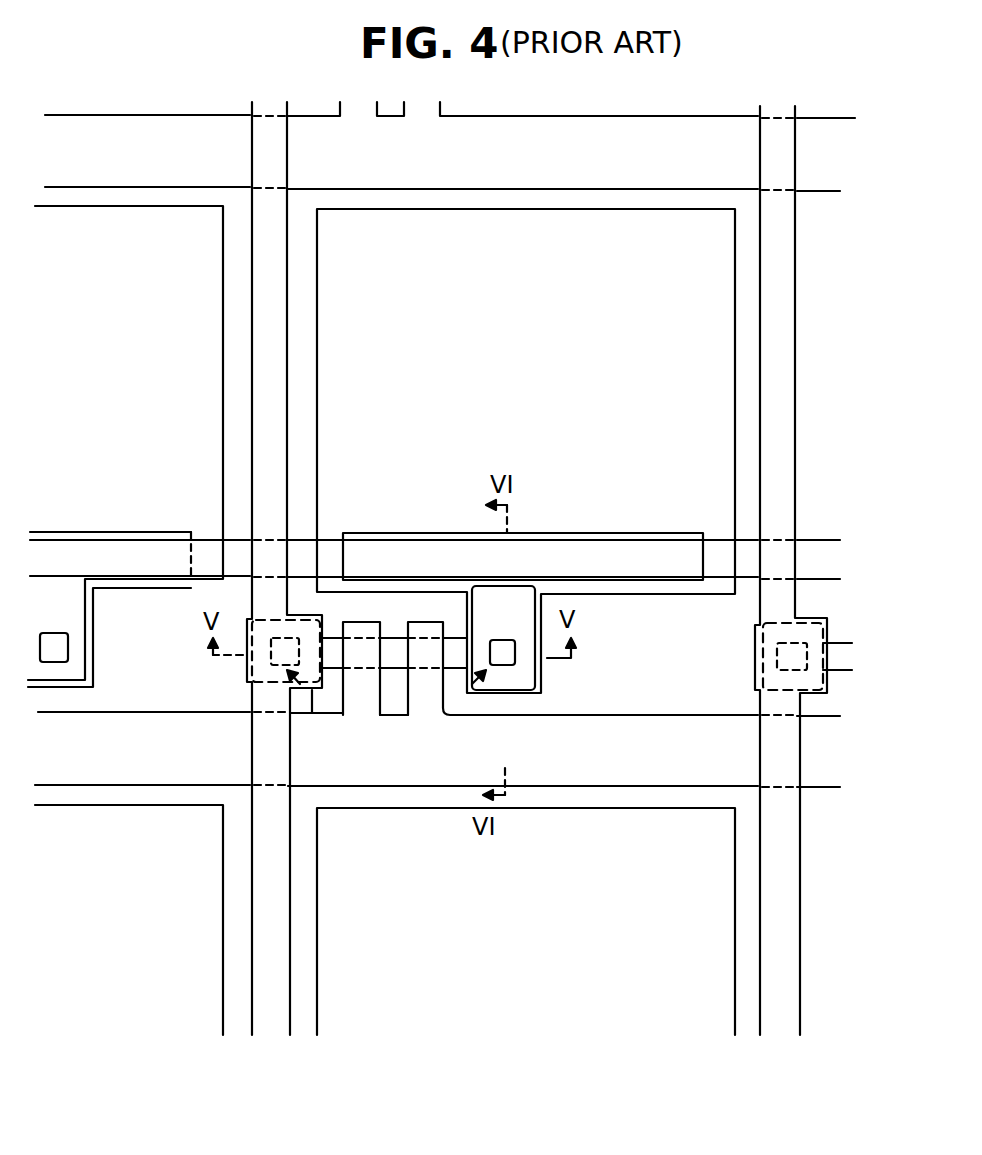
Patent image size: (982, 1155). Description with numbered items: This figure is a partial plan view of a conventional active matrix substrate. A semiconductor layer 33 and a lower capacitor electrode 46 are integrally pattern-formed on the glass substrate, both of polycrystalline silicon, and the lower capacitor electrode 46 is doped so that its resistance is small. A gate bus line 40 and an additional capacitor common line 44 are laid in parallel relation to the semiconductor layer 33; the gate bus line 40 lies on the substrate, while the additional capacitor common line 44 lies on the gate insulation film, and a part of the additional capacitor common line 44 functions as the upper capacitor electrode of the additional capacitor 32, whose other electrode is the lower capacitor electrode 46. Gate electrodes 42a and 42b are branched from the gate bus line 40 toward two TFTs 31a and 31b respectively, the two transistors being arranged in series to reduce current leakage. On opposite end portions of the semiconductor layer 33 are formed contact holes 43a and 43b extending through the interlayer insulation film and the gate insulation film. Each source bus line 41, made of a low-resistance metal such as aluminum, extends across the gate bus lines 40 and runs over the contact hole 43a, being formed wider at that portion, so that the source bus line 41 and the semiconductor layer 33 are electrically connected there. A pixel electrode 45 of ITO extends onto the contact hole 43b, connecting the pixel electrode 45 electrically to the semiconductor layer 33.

The TFT 31a is at (360, 624).
The TFT 31b is at (420, 632).
The additional capacitor 32 is at (366, 531).
The semiconductor layer 33 is at (398, 660).
The gate bus line 40 is at (827, 772).
The source bus line 41 is at (273, 412).
The gate electrode 42a is at (345, 622).
The gate electrode 42b is at (437, 621).
The contact hole 43a is at (308, 690).
The contact hole 43b is at (447, 693).
The additional capacitor common line 44 is at (822, 548).
The pixel electrode 45 is at (575, 226).
The lower capacitor electrode 46 is at (538, 559).